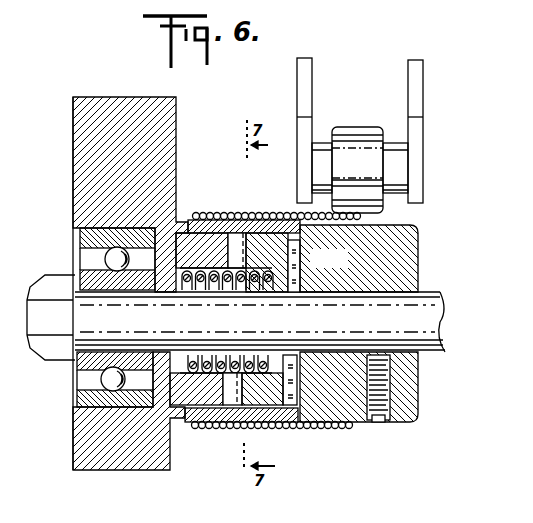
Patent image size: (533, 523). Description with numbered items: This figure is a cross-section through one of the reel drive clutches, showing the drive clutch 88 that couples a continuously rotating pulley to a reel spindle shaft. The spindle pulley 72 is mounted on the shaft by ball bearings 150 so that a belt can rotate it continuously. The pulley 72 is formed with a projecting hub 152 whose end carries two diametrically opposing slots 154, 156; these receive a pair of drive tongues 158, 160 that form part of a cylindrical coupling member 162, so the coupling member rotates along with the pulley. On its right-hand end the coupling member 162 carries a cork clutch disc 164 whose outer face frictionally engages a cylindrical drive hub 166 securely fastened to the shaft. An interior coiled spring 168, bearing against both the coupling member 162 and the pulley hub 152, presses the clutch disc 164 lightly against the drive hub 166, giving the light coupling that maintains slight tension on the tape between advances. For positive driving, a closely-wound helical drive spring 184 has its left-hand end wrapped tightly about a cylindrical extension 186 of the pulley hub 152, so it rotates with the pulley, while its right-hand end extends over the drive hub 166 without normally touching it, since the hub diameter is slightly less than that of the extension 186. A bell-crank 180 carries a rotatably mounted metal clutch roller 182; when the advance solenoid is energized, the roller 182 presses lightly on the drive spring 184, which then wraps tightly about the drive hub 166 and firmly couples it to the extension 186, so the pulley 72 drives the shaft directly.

The spindle pulley 72 is at (88, 160).
The drive clutch 88 is at (230, 168).
The ball bearings 150 is at (92, 240).
The projecting hub 152 is at (182, 226).
The slot 154 is at (224, 232).
The slot 156 is at (218, 392).
The drive tongue 158 is at (258, 237).
The drive tongue 160 is at (232, 393).
The cylindrical coupling member 162 is at (263, 216).
The cork clutch disc 164 is at (301, 260).
The cylindrical drive hub 166 is at (395, 262).
The interior coiled spring 168 is at (203, 268).
The bell-crank 180 is at (305, 82).
The metal clutch roller 182 is at (355, 137).
The helical drive spring 184 is at (232, 429).
The cylindrical extension 186 is at (257, 418).